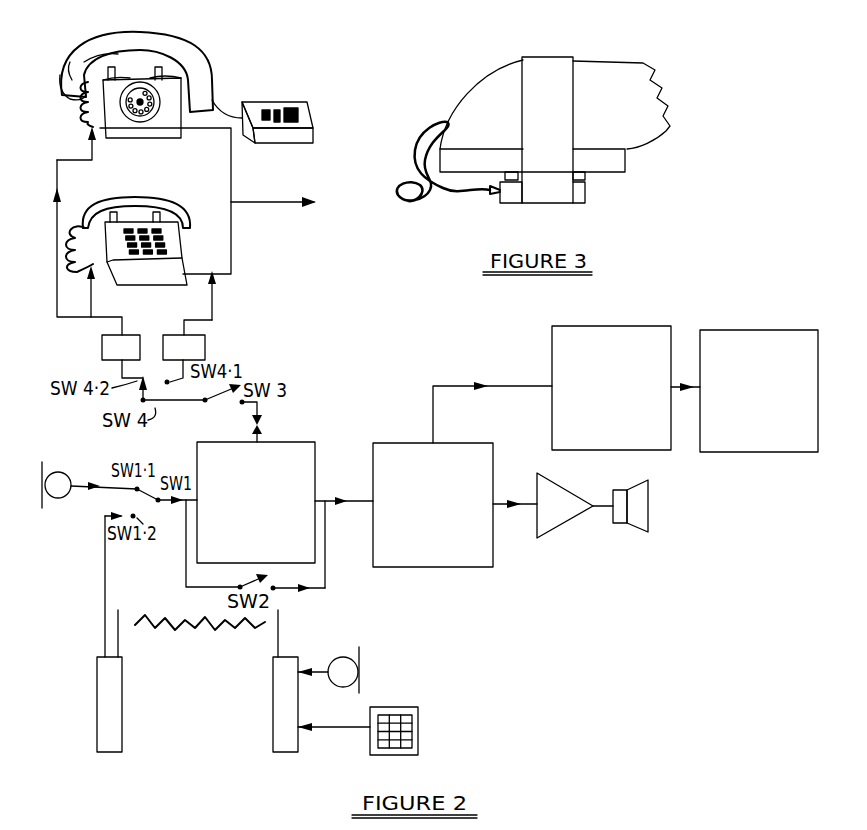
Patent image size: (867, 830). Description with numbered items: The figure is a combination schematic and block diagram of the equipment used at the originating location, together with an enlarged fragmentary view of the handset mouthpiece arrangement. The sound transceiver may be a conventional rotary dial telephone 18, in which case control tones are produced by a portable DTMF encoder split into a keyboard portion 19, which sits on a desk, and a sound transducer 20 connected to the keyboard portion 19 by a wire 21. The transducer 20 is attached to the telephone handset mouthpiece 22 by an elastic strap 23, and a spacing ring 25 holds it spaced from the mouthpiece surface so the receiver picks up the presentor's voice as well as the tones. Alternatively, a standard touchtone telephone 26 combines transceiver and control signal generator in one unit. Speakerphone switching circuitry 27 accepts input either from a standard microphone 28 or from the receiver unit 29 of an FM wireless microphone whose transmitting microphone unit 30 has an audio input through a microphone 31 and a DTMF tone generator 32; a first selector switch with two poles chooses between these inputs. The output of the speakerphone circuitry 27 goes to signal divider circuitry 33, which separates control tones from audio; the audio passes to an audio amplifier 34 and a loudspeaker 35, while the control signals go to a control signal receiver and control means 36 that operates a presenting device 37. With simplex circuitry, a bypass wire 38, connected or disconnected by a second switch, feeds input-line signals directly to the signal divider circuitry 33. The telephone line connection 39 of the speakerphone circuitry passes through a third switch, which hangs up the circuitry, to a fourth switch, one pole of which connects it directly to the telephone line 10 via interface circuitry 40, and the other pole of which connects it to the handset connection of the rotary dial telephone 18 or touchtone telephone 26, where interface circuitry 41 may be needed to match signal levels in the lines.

In FIG. 2, the telephone line 10 is at (258, 203).
In FIG. 2, the rotary dial telephone 18 is at (168, 102).
In FIG. 2, the keyboard portion 19 is at (302, 120).
In FIG. 2, the sound transducer 20 is at (68, 97).
In FIG. 3, the sound transducer 20 is at (510, 195).
In FIG. 2, the wire 21 is at (195, 40).
In FIG. 3, the wire 21 is at (458, 195).
In FIG. 2, the telephone handset mouthpiece 22 is at (105, 62).
In FIG. 3, the telephone handset mouthpiece 22 is at (492, 85).
In FIG. 2, the elastic strap 23 is at (75, 62).
In FIG. 3, the elastic strap 23 is at (537, 67).
In FIG. 3, the spacing ring 25 is at (590, 180).
In FIG. 2, the touchtone telephone 26 is at (160, 276).
In FIG. 2, the speakerphone switching circuitry 27 is at (208, 442).
In FIG. 2, the standard microphone 28 is at (65, 470).
In FIG. 2, the receiver unit 29 is at (97, 705).
In FIG. 2, the transmitting microphone unit 30 is at (273, 710).
In FIG. 2, the microphone 31 is at (345, 657).
In FIG. 2, the DTMF tone generator 32 is at (398, 707).
In FIG. 2, the signal divider circuitry 33 is at (460, 567).
In FIG. 2, the audio amplifier 34 is at (555, 532).
In FIG. 2, the loudspeaker 35 is at (650, 520).
In FIG. 2, the control signal receiver and control means 36 is at (605, 326).
In FIG. 2, the presenting device 37 is at (742, 330).
In FIG. 2, the bypass wire 38 is at (325, 588).
In FIG. 2, the telephone line connection 39 is at (263, 425).
In FIG. 2, the interface circuitry 40 is at (205, 350).
In FIG. 2, the interface circuitry 41 is at (102, 347).